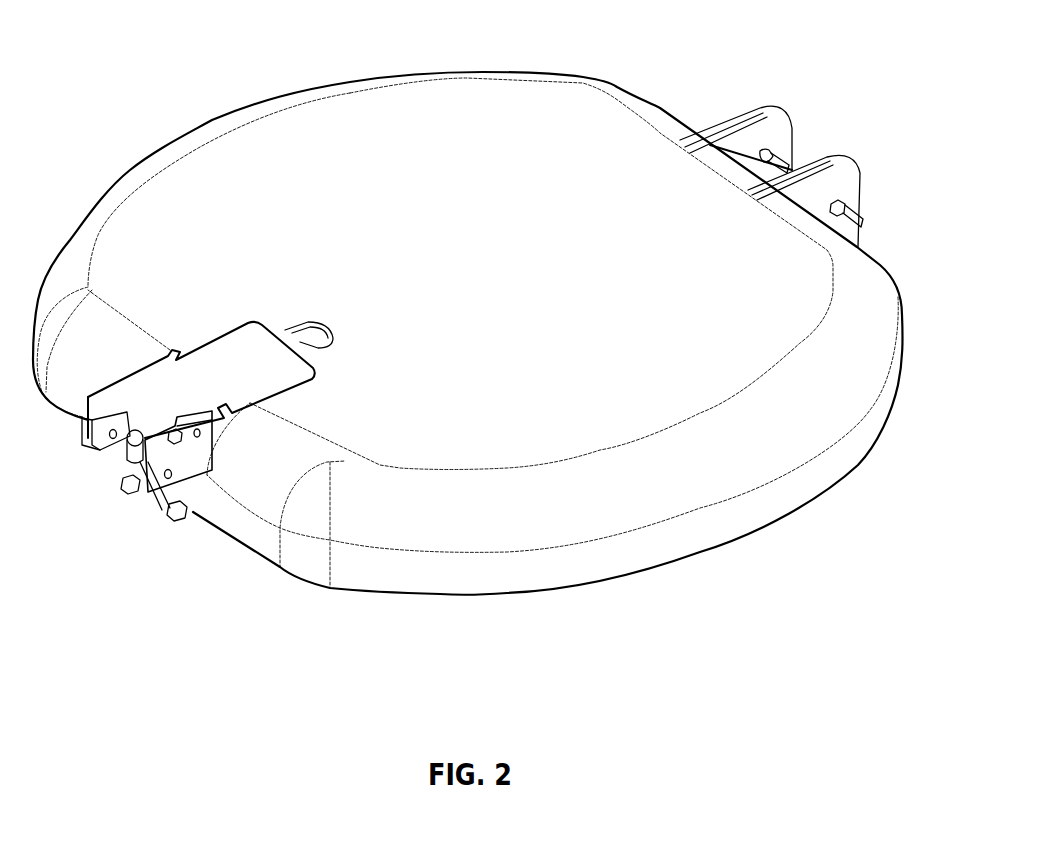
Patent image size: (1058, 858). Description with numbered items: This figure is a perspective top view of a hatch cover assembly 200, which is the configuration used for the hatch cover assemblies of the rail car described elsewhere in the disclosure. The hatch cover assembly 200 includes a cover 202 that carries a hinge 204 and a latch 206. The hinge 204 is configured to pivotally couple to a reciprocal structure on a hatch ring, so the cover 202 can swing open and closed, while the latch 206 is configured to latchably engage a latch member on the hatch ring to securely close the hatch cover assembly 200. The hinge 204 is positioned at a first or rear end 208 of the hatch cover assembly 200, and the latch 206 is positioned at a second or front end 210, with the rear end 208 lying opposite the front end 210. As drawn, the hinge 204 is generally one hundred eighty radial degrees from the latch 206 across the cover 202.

The hatch cover assembly 200 is at (105, 60).
The cover 202 is at (427, 95).
The hinge 204 is at (842, 163).
The latch 206 is at (127, 417).
The rear end 208 is at (858, 240).
The front end 210 is at (232, 510).